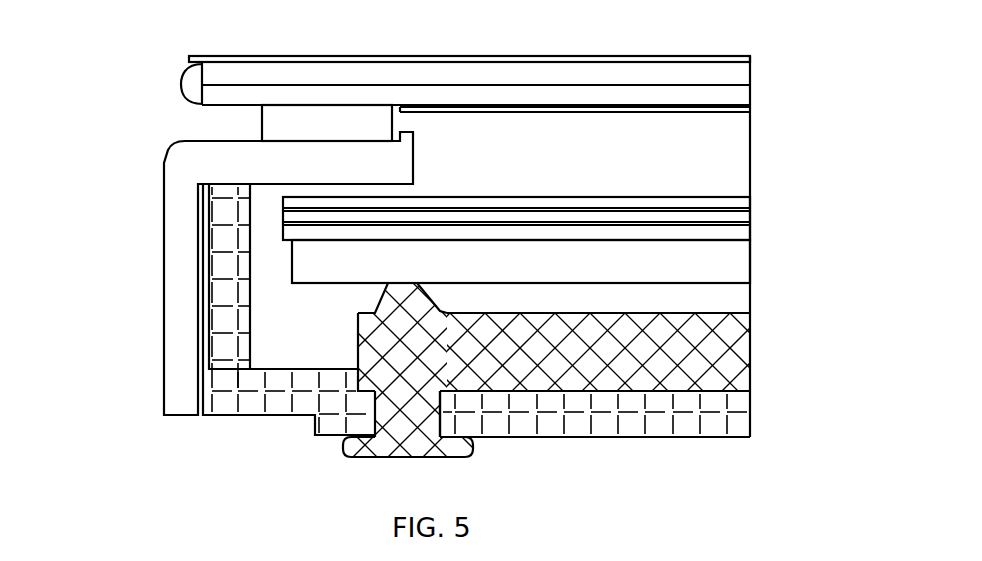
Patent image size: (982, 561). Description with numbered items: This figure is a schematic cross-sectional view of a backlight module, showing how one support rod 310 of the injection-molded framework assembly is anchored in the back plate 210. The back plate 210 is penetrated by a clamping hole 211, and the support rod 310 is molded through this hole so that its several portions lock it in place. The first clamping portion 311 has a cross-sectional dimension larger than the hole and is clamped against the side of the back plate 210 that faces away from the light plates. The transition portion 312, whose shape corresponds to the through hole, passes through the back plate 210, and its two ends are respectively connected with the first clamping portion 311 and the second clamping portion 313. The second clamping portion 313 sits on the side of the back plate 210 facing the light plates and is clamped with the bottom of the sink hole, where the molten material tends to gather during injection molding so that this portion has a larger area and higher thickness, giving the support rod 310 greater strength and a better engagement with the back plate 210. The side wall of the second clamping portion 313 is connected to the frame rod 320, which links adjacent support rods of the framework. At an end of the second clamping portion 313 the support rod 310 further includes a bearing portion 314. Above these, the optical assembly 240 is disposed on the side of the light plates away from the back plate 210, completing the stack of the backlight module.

The back plate 210 is at (633, 425).
The clamping hole 211 is at (445, 415).
The optical assembly 240 is at (695, 258).
The support rod 310 is at (306, 375).
The first clamping portion 311 is at (350, 443).
The transition portion 312 is at (370, 397).
The second clamping portion 313 is at (377, 338).
The bearing portion 314 is at (388, 298).
The frame rod 320 is at (703, 352).